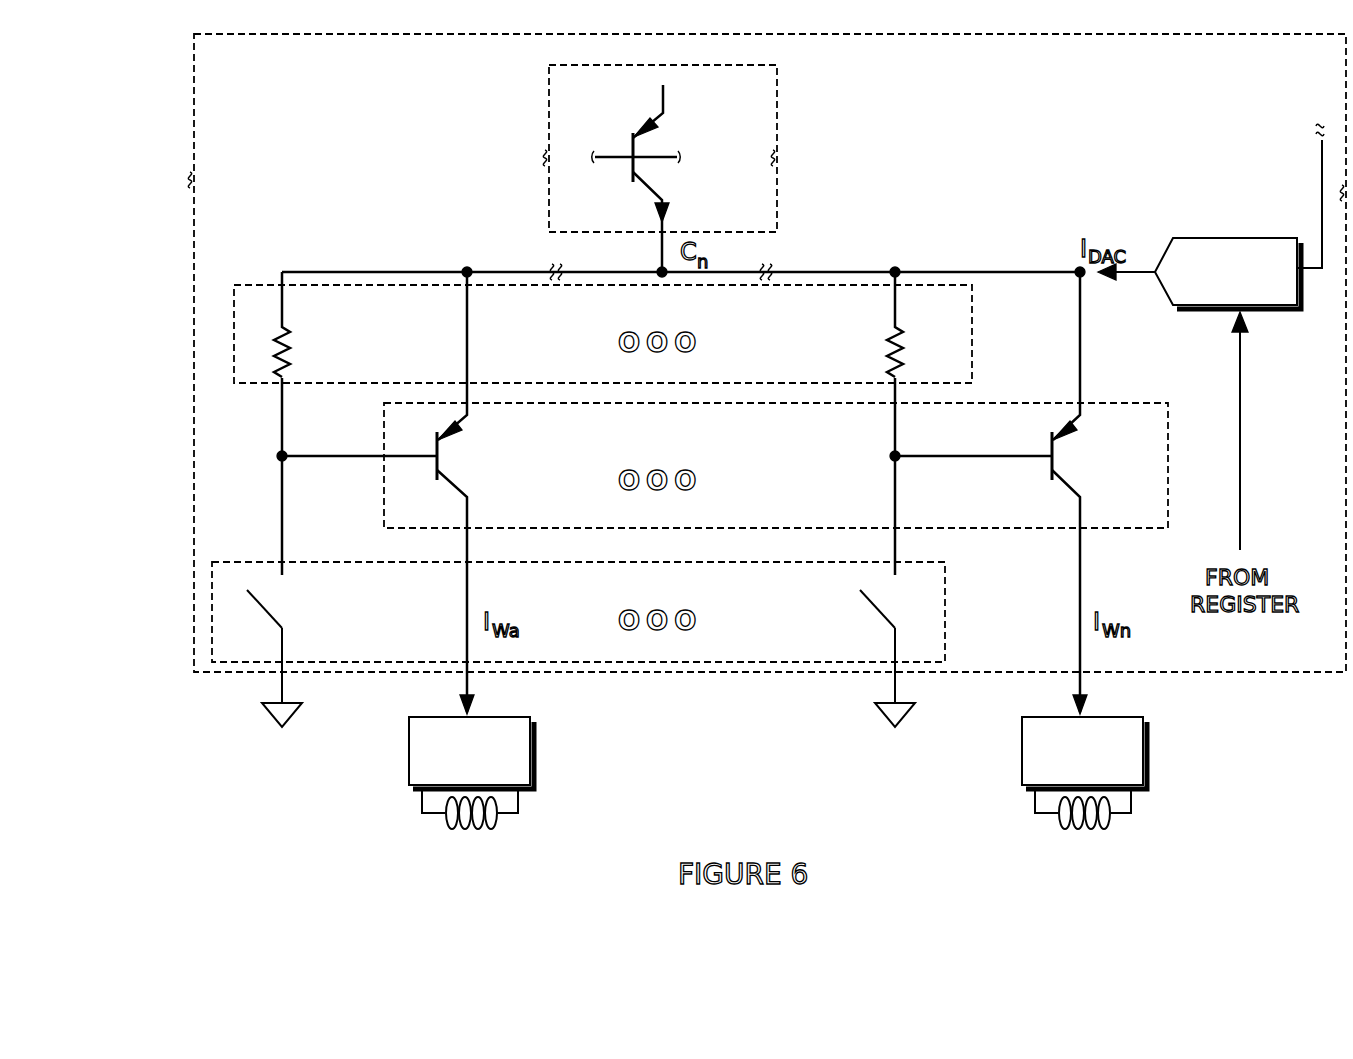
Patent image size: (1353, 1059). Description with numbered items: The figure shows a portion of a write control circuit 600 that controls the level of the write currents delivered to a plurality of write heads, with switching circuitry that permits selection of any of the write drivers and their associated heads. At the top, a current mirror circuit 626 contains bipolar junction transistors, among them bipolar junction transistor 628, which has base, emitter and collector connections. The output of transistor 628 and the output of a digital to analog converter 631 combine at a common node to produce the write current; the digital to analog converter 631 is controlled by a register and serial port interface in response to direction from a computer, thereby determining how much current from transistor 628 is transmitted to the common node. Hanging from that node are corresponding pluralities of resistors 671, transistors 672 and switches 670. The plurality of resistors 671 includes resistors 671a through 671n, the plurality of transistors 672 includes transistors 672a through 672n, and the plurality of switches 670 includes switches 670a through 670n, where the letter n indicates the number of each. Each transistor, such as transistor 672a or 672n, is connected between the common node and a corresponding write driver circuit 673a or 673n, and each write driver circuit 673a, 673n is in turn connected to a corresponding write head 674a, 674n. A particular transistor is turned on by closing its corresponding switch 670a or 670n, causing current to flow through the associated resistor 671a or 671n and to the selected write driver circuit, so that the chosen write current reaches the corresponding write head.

The write control circuit 600 is at (193, 83).
The current mirror circuit 626 is at (549, 98).
The bipolar junction transistor 628 is at (620, 170).
The digital to analog converter 631 is at (1203, 242).
The plurality of resistors 671 is at (252, 270).
The resistor 671a is at (290, 343).
The resistor 671n is at (903, 343).
The plurality of transistors 672 is at (1100, 403).
The transistor 672a is at (435, 468).
The transistor 672n is at (1050, 468).
The plurality of switches 670 is at (948, 618).
The switch 670a is at (284, 628).
The switch 670n is at (917, 605).
The write driver circuit 673a is at (505, 720).
The write driver circuit 673n is at (1118, 720).
The write head 674a is at (438, 818).
The write head 674n is at (1050, 818).